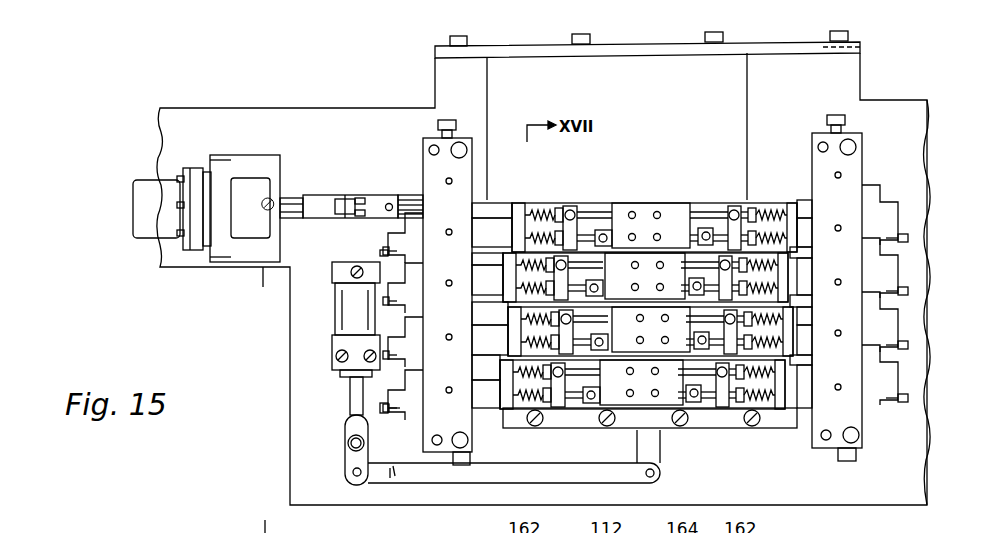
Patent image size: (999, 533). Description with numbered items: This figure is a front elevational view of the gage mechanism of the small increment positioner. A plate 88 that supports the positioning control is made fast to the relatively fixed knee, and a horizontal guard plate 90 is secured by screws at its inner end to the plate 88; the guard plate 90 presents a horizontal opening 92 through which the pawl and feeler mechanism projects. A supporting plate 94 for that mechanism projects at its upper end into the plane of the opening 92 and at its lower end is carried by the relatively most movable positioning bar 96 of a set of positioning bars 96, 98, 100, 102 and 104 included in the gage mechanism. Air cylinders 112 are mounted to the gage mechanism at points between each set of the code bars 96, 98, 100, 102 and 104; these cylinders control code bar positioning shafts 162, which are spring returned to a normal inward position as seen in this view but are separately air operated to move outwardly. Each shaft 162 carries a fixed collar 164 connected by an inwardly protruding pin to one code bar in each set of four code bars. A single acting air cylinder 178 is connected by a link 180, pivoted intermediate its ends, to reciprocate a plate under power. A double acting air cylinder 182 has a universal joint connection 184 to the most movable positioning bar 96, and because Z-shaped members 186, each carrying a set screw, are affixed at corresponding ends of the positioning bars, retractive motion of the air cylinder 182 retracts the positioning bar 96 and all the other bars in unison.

The plate 88 is at (337, 497).
The horizontal guard plate 90 is at (433, 51).
The horizontal opening 92 is at (863, 46).
The supporting plate 94 is at (490, 84).
The positioning bar 96 is at (481, 200).
The positioning bar 98 is at (806, 258).
The positioning bar 100 is at (806, 312).
The positioning bar 102 is at (806, 366).
The positioning bar 104 is at (800, 418).
The air cylinders 112 is at (649, 206).
The code bar positioning shafts 162 is at (575, 397).
The fixed collar 164 is at (695, 406).
The single acting air cylinder 178 is at (334, 305).
The link 180 is at (413, 482).
The double acting air cylinder 182 is at (137, 185).
The universal joint connection 184 is at (345, 198).
The Z-shaped members 186 is at (900, 231).